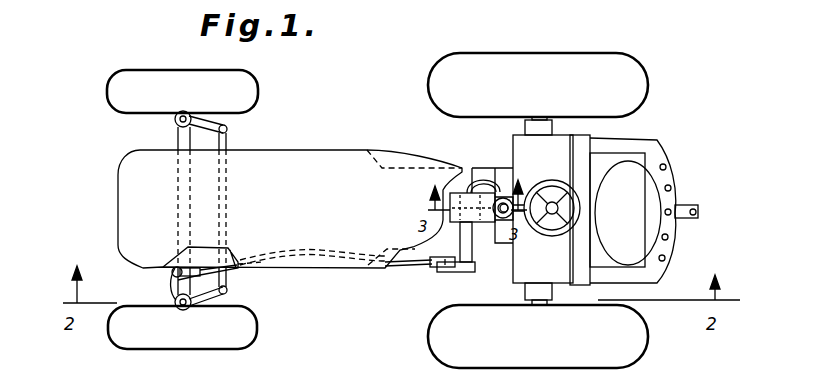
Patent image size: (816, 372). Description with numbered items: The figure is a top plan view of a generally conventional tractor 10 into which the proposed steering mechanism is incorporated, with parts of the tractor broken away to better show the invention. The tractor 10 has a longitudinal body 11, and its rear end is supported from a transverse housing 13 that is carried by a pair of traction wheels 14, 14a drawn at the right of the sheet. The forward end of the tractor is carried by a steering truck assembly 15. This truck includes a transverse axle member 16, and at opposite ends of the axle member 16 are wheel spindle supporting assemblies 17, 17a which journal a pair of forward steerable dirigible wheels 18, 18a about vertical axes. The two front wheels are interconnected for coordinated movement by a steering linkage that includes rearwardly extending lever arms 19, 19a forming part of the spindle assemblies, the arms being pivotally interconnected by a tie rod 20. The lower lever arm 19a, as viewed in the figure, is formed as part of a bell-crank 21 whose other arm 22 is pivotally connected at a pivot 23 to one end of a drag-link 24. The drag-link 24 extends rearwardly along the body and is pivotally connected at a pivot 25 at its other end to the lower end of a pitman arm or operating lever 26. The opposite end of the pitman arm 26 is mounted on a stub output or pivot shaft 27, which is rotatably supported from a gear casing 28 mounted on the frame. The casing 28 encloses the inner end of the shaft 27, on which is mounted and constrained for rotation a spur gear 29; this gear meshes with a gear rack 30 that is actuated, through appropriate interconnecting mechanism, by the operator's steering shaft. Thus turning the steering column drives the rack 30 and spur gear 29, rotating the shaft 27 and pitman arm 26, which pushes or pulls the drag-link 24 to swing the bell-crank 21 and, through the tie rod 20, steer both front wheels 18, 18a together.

The tractor 10 is at (113, 186).
The longitudinal body 11 is at (282, 160).
The transverse housing 13 is at (567, 133).
The traction wheel 14 is at (598, 65).
The traction wheel 14a is at (700, 328).
The steering truck assembly 15 is at (215, 157).
The transverse axle member 16 is at (178, 138).
The wheel spindle supporting assembly 17 is at (188, 112).
The wheel spindle supporting assembly 17a is at (182, 308).
The forward steerable dirigible wheel 18 is at (135, 78).
The forward steerable dirigible wheel 18a is at (118, 330).
The lever arm 19 is at (210, 118).
The lever arm 19a is at (222, 295).
The tie rod 20 is at (227, 136).
The bell-crank 21 is at (178, 300).
The arm 22 is at (170, 285).
The pivotal connection 23 is at (172, 268).
The drag-link 24 is at (224, 248).
The pivotal connection 25 is at (440, 268).
The pitman arm 26 is at (456, 273).
The stub output shaft 27 is at (466, 238).
The gear casing 28 is at (490, 245).
The spur gear 29 is at (462, 198).
The gear rack 30 is at (483, 186).